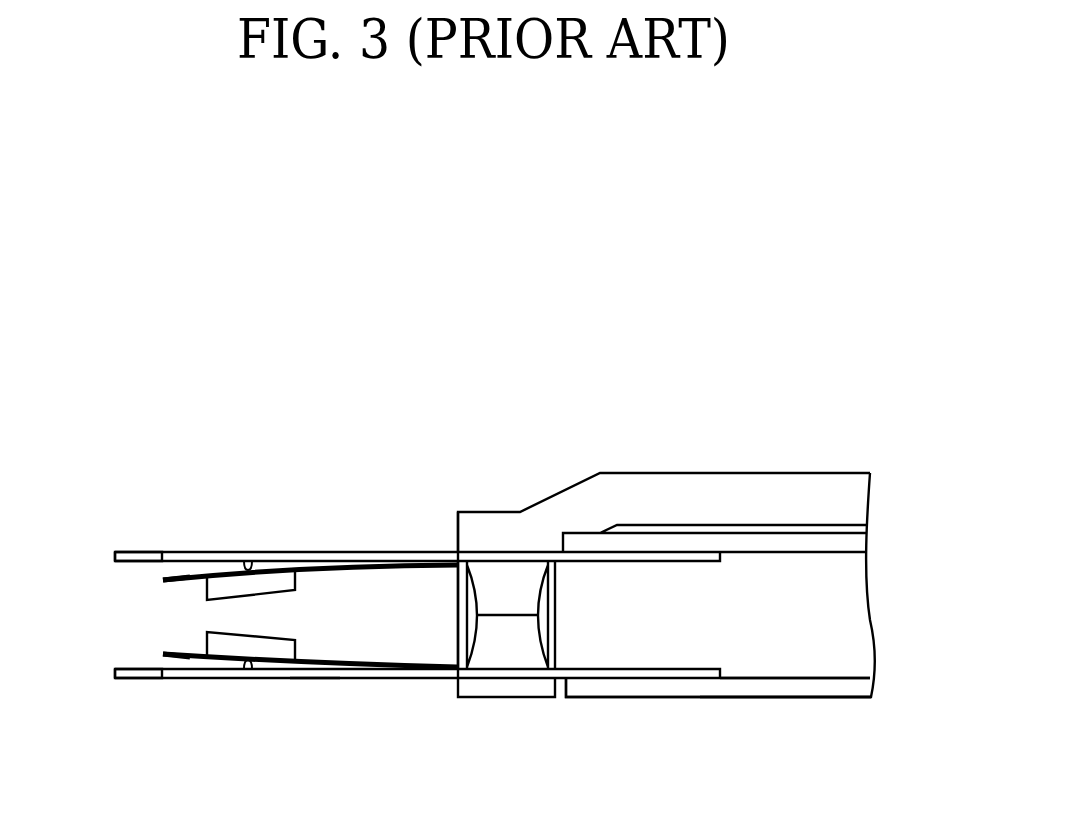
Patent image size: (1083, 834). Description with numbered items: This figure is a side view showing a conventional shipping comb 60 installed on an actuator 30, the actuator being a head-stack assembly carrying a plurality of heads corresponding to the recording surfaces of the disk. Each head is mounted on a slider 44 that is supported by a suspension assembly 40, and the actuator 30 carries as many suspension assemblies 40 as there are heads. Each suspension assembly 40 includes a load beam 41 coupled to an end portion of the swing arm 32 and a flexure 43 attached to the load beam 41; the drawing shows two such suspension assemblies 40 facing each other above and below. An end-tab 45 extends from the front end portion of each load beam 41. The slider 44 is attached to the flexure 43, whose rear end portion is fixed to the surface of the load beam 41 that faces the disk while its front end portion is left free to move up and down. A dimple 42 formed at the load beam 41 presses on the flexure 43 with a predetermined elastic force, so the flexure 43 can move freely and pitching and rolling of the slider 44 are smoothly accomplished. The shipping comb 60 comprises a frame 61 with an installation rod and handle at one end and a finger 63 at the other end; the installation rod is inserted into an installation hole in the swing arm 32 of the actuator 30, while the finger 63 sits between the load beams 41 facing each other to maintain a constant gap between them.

The actuator 30 is at (749, 736).
The swing arm 32 is at (817, 542).
The suspension assembly 40 is at (316, 690).
The load beam 41 is at (373, 677).
The dimple 42 is at (250, 552).
The flexure 43 is at (163, 654).
The slider 44 is at (295, 590).
The end-tab 45 is at (128, 552).
The shipping comb 60 is at (745, 455).
The frame 61 is at (619, 490).
The finger 63 is at (505, 657).